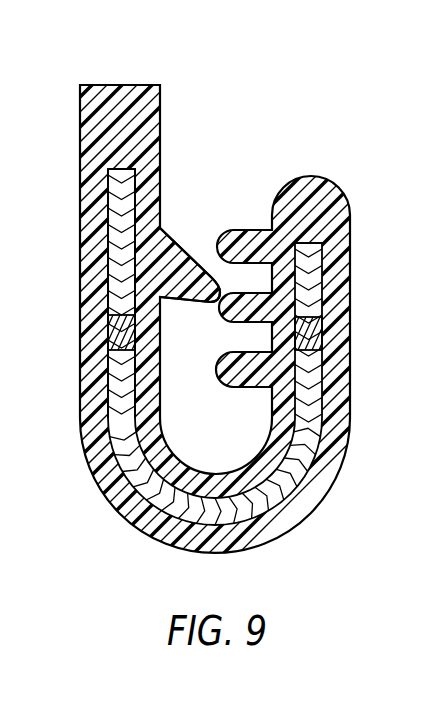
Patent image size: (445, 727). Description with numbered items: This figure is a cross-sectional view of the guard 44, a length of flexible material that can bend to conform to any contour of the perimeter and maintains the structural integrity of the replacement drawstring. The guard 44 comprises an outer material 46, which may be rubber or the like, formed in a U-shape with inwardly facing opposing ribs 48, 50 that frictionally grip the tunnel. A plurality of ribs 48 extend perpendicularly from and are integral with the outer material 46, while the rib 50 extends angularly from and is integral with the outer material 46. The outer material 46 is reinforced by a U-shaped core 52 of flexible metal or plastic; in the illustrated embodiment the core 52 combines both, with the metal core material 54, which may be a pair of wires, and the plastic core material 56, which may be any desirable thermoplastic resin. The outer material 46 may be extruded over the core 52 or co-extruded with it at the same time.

The guard 44 is at (222, 310).
The outer material 46 is at (310, 192).
The ribs 48 is at (242, 216).
The rib 50 is at (180, 212).
The core 52 is at (128, 463).
The core material 54 is at (117, 333).
The core material 56 is at (122, 382).